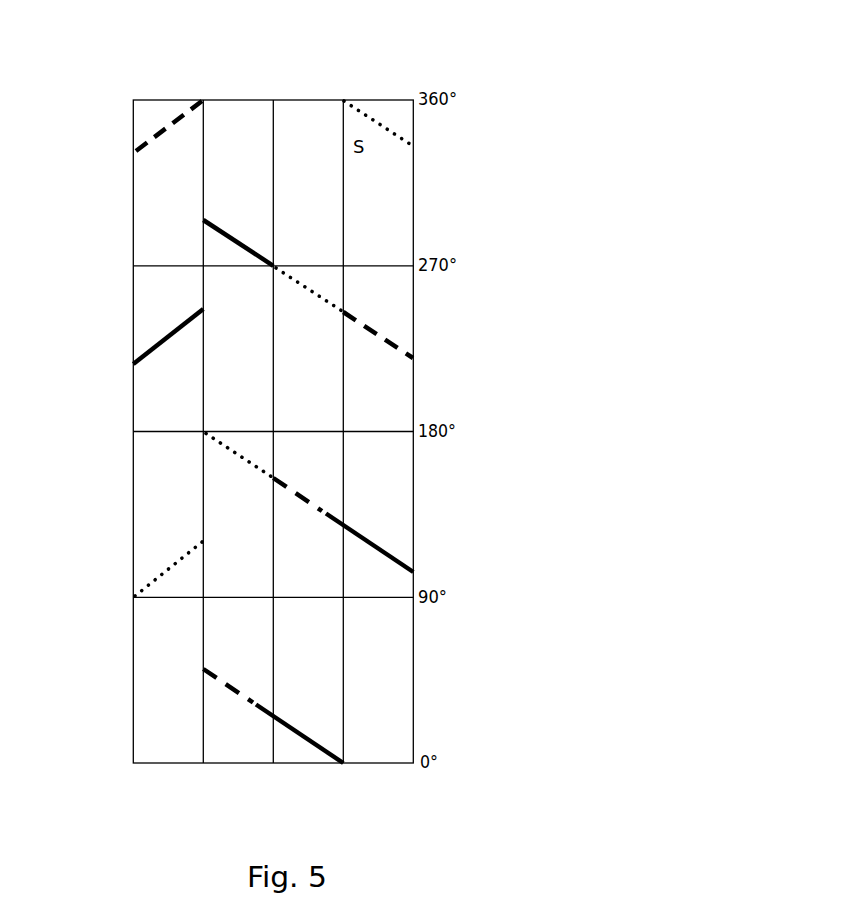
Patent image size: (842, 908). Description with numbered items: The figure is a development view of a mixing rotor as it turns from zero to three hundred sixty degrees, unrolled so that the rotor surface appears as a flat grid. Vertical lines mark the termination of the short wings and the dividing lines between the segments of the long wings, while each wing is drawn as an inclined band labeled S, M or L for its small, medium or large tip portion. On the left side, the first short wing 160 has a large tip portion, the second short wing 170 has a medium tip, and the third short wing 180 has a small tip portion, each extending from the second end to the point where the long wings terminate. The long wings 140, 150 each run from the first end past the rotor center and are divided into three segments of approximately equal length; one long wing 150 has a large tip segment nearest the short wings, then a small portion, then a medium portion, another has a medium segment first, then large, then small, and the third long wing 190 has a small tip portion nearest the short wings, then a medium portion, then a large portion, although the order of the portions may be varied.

The long wing 140 is at (368, 284).
The long wing 150 is at (353, 697).
The first short wing 160 is at (124, 308).
The second short wing 170 is at (132, 90).
The third short wing 180 is at (118, 534).
The third long wing 190 is at (366, 503).